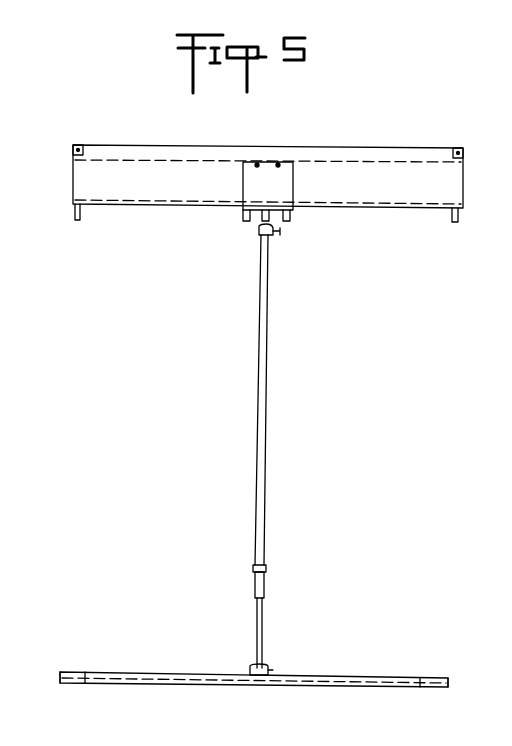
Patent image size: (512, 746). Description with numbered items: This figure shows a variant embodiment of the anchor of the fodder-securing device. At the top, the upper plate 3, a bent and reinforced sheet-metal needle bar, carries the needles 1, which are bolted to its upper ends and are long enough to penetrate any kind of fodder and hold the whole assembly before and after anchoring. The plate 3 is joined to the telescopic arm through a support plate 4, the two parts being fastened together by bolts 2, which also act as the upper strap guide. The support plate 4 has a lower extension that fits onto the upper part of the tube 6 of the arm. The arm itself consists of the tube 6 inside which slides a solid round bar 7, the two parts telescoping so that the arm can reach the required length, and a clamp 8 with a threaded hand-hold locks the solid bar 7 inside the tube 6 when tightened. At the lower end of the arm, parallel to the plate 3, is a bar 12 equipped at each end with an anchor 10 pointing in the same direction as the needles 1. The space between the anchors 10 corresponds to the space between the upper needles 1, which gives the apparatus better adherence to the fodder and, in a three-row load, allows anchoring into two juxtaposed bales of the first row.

The needles 1 is at (79, 145).
The bolts 2 is at (278, 164).
The upper plate 3 is at (84, 183).
The support plate 4 is at (245, 190).
The tube 6 is at (267, 424).
The solid round bar 7 is at (265, 637).
The clamp 8 is at (268, 568).
The anchor 10 is at (86, 673).
The bar 12 is at (350, 678).